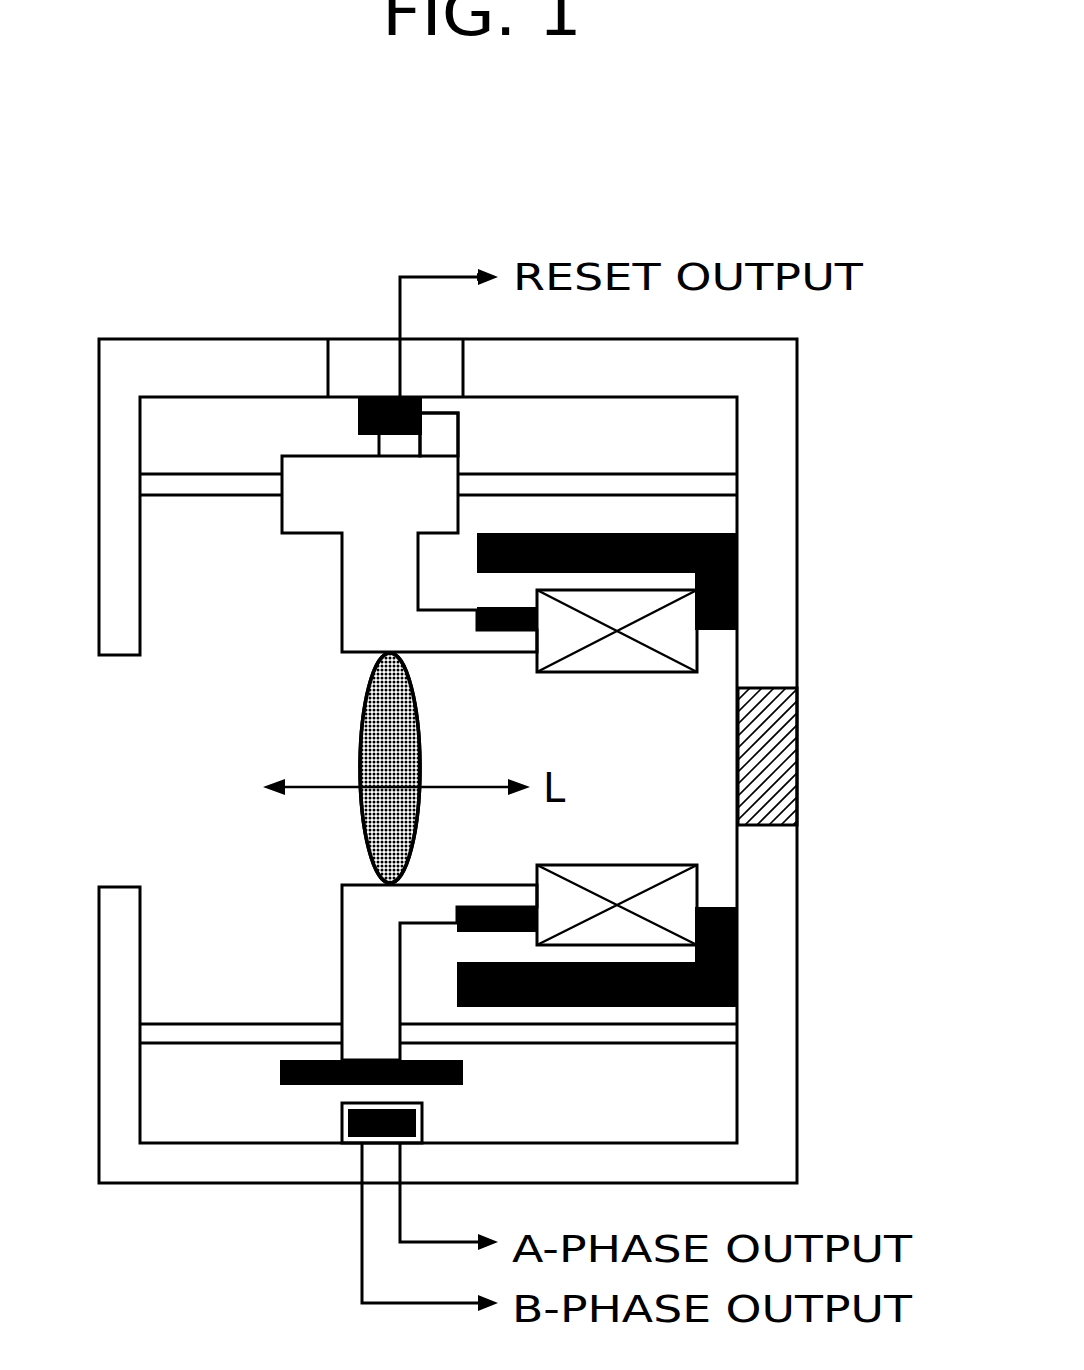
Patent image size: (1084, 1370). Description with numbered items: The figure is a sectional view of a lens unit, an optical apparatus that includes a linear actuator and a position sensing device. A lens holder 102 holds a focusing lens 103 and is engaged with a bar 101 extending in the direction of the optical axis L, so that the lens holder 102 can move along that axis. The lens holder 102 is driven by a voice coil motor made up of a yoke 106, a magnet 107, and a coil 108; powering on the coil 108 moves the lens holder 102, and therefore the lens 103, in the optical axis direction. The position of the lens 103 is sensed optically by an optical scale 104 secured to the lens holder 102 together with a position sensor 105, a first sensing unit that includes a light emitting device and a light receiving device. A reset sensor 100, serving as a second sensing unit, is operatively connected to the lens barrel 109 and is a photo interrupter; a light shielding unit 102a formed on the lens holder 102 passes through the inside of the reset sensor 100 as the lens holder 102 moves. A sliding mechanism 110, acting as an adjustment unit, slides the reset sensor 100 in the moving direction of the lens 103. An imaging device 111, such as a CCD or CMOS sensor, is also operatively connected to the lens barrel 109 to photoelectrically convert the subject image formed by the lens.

The reset sensor 100 is at (379, 397).
The bar 101 is at (224, 497).
The lens holder 102 is at (342, 638).
The light shielding unit 102a is at (445, 432).
The lens 103 is at (368, 741).
The optical scale 104 is at (303, 1060).
The position sensor 105 is at (348, 1126).
The yoke 106 is at (738, 950).
The magnet 107 is at (543, 532).
The coil 108 is at (627, 653).
The lens barrel 109 is at (788, 620).
The sliding mechanism 110 is at (328, 400).
The imaging device 111 is at (788, 752).